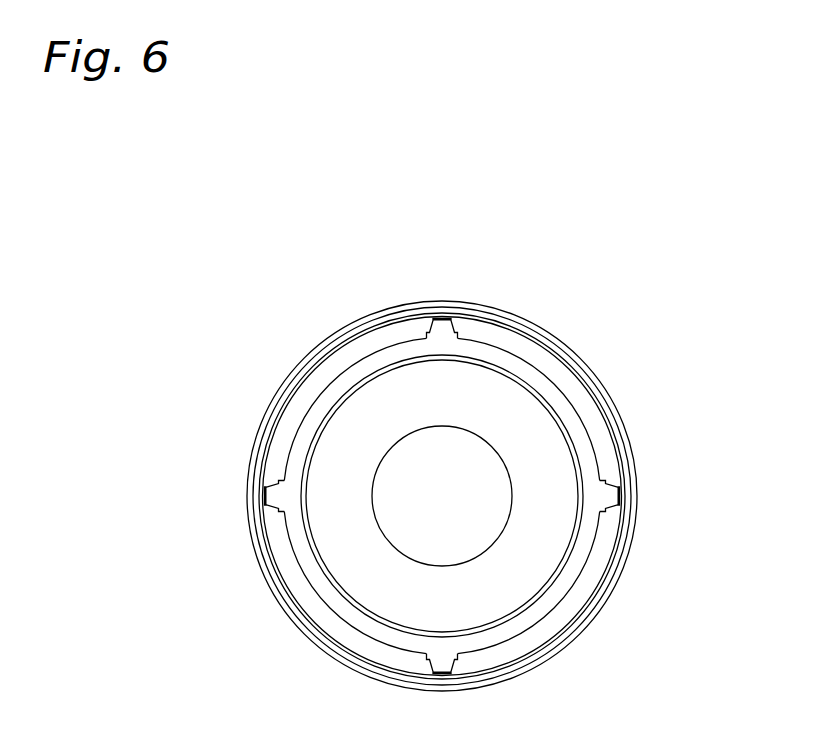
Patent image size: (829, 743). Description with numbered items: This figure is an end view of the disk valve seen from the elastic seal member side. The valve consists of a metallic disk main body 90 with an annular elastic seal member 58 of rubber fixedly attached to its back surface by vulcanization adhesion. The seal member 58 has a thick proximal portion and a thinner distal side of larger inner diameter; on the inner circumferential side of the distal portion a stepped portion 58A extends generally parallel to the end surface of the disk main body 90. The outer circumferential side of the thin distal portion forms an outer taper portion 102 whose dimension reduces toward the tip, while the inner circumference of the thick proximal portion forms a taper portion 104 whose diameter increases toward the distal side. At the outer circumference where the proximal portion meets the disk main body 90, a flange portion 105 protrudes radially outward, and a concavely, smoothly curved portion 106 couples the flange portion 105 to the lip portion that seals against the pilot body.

The elastic seal member 58 is at (567, 382).
The stepped portion 58A is at (318, 408).
The disk main body 90 is at (482, 397).
The outer taper portion 102 is at (568, 608).
The taper portion 104 is at (385, 367).
The flange portion 105 is at (628, 438).
The curved portion 106 is at (623, 492).